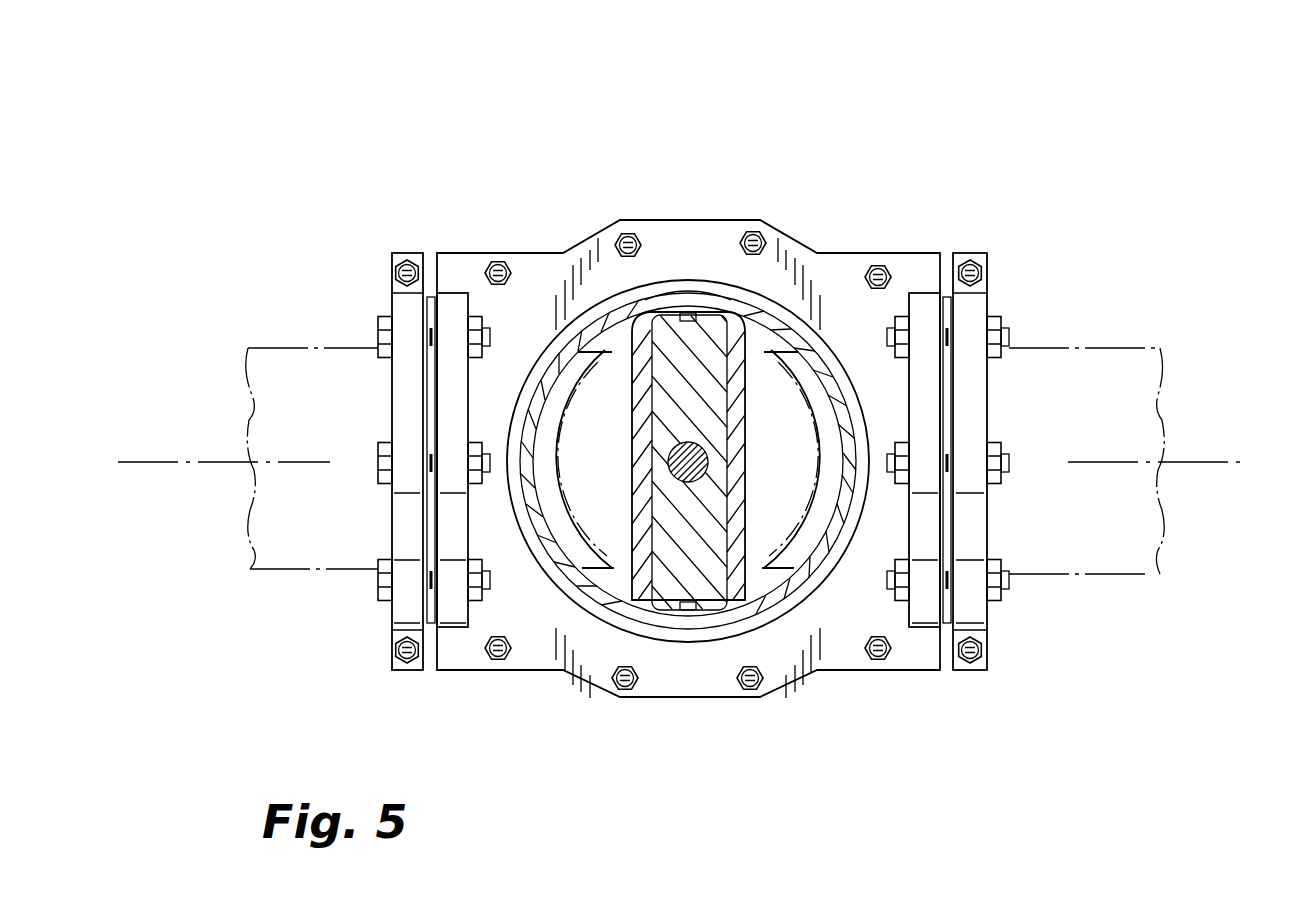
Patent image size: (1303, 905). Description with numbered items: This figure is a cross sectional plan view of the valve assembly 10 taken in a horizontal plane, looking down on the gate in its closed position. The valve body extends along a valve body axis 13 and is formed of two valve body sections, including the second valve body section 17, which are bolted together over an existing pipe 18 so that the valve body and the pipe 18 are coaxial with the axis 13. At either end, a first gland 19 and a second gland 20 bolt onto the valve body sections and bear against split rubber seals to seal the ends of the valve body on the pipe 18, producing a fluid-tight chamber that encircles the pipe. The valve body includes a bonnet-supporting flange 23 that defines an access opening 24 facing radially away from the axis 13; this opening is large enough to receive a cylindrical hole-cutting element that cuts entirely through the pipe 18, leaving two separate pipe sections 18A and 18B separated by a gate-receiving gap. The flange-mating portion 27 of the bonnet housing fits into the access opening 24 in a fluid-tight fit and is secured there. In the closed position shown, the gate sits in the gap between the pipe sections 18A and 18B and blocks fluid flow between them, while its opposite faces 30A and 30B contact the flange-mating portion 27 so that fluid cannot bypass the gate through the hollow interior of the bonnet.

The valve assembly 10 is at (173, 140).
The valve body axis 13 is at (122, 464).
The second valve body section 17 is at (470, 252).
The existing pipe 18 is at (247, 348).
The first pipe section 18A is at (252, 570).
The second pipe section 18B is at (1160, 574).
The first gland 19 is at (403, 672).
The second gland 20 is at (985, 672).
The bonnet-supporting flange 23 is at (722, 636).
The access opening 24 is at (616, 575).
The flange-mating portion 27 is at (702, 622).
The first gate face 30A is at (645, 330).
The second gate face 30B is at (735, 330).